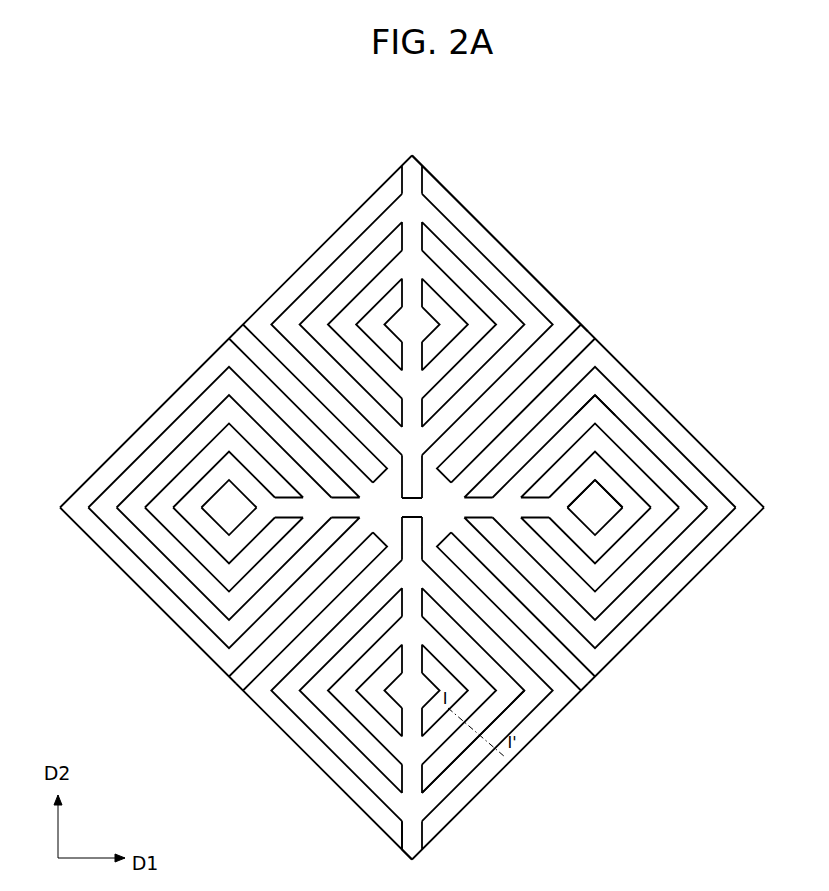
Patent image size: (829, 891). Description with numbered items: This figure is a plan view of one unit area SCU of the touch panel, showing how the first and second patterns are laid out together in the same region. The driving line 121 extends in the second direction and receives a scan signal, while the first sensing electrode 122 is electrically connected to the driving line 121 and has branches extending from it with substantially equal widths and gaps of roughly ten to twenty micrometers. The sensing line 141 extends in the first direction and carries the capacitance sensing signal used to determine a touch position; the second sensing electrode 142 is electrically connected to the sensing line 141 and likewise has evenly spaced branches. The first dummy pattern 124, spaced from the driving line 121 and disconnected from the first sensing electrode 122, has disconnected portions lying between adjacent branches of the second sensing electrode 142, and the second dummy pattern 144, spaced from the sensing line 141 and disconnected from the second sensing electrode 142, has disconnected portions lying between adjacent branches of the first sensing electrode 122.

The second dummy pattern 144 is at (508, 176).
The sensing line 141 is at (344, 500).
The second sensing electrode 142 is at (630, 480).
The first dummy pattern 124 is at (620, 487).
The first sensing electrode 122 is at (482, 745).
The driving line 121 is at (393, 798).
The sensing cell unit SCU is at (615, 245).